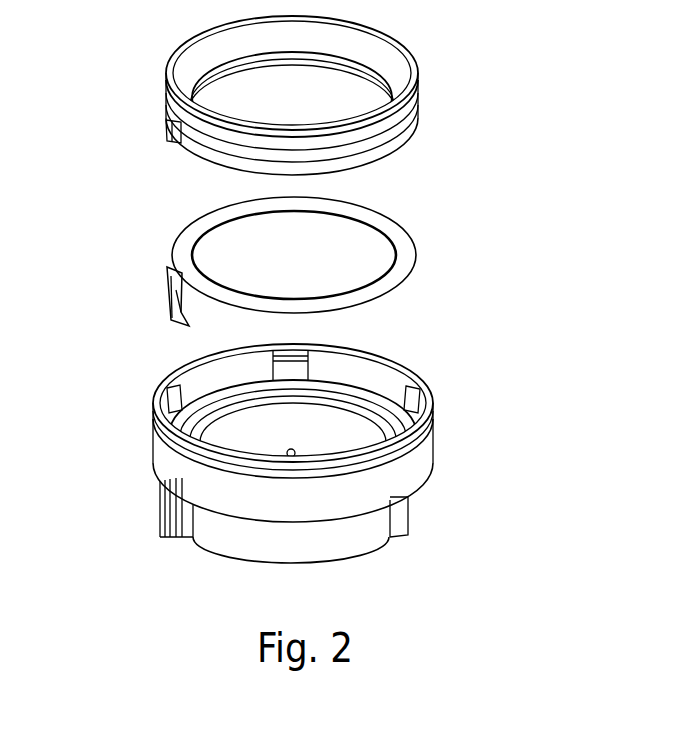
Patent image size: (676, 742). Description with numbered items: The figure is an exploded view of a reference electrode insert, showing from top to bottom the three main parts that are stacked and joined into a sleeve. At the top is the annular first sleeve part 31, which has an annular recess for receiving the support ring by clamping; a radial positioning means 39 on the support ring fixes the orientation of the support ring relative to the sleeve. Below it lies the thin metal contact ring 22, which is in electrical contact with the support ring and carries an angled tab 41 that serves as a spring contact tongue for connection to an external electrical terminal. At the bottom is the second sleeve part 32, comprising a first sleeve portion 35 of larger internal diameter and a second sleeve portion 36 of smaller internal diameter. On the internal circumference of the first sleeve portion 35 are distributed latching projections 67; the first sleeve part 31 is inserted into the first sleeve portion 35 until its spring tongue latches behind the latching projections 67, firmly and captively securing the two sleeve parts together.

The first sleeve part 31 is at (420, 104).
The positioning means 39 is at (168, 127).
The contact ring 22 is at (417, 254).
The angled tab 41 is at (168, 295).
The second sleeve part 32 is at (295, 439).
The first sleeve portion 35 is at (430, 438).
The second sleeve portion 36 is at (368, 523).
The latching projections 67 is at (296, 343).